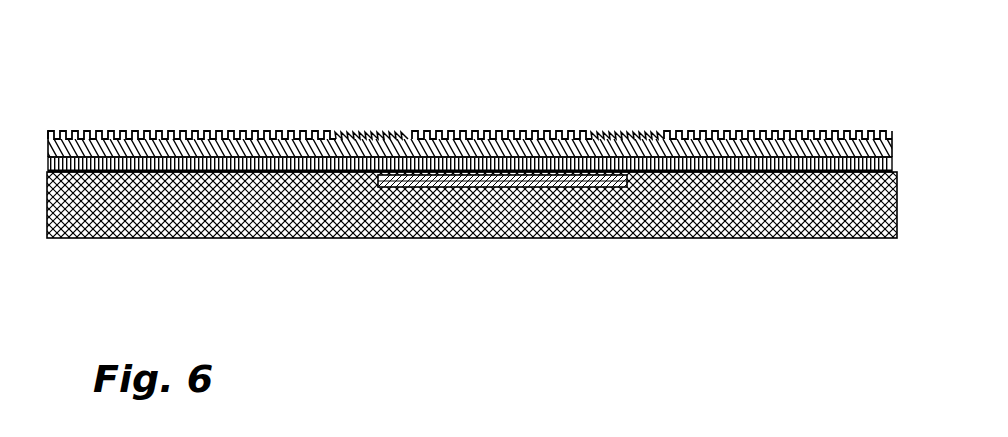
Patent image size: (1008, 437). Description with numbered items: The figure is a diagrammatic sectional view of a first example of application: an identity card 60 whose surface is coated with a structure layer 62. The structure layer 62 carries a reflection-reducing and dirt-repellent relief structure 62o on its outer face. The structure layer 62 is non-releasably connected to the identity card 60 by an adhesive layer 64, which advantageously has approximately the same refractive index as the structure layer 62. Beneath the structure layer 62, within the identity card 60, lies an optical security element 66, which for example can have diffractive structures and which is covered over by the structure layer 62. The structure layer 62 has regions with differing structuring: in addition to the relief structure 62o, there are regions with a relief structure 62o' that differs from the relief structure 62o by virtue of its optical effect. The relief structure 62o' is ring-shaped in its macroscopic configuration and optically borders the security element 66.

The identity card 60 is at (812, 240).
The structure layer 62 is at (895, 147).
The relief structure 62o is at (470, 105).
The relief structure 62o' is at (524, 96).
The adhesive layer 64 is at (47, 160).
The optical security element 66 is at (627, 190).